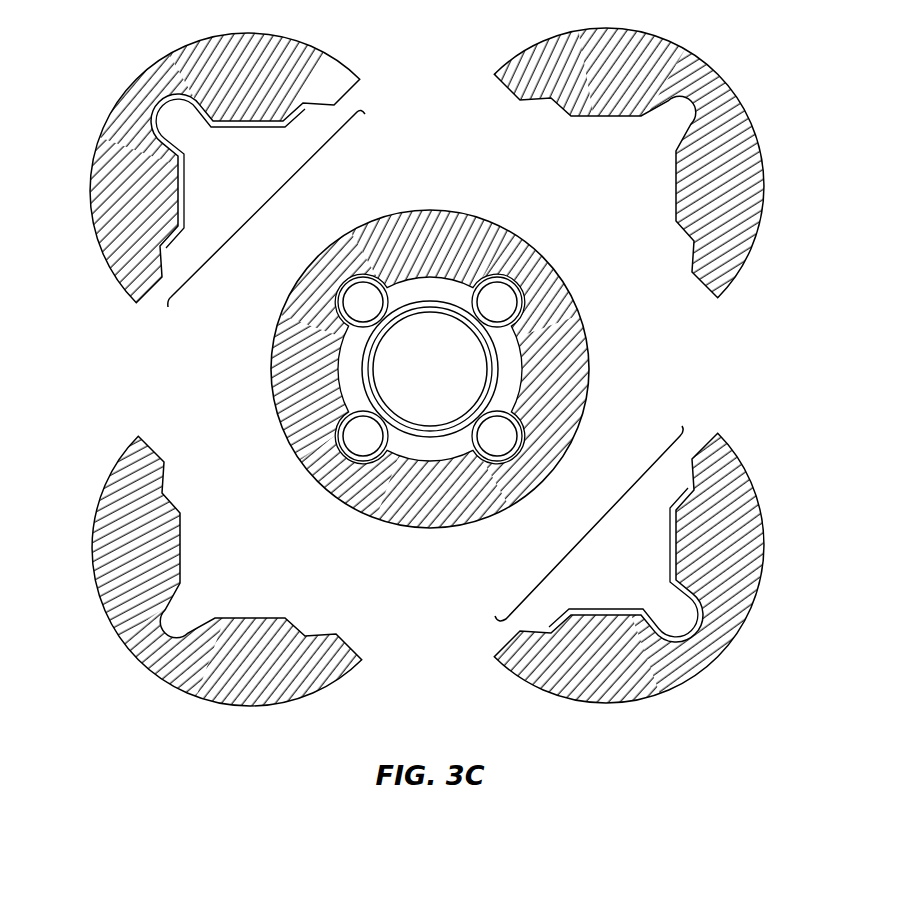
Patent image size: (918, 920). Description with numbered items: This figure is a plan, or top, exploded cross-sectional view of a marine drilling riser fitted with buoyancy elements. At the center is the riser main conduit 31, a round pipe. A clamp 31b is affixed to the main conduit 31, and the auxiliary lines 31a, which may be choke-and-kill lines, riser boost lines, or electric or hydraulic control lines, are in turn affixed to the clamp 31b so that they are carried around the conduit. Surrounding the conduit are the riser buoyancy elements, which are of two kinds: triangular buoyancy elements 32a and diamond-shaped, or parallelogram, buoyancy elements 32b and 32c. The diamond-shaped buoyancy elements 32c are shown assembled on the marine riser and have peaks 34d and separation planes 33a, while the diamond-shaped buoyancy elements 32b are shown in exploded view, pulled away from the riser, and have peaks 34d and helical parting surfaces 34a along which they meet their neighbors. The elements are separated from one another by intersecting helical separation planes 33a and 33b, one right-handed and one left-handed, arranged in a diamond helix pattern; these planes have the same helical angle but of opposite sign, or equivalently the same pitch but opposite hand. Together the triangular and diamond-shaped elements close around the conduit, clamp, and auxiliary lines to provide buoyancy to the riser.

The main conduit 31 is at (363, 356).
The auxiliary lines 31a is at (352, 303).
The clamp 31b is at (345, 370).
The triangular buoyancy elements 32a is at (163, 64).
The diamond-shaped buoyancy elements 32b is at (718, 300).
The diamond-shaped buoyancy elements 32c is at (262, 206).
The helical separation plane 33a is at (333, 467).
The helical separation plane 33b is at (533, 262).
The helical parting surfaces 34a is at (625, 52).
The peaks 34d is at (340, 300).